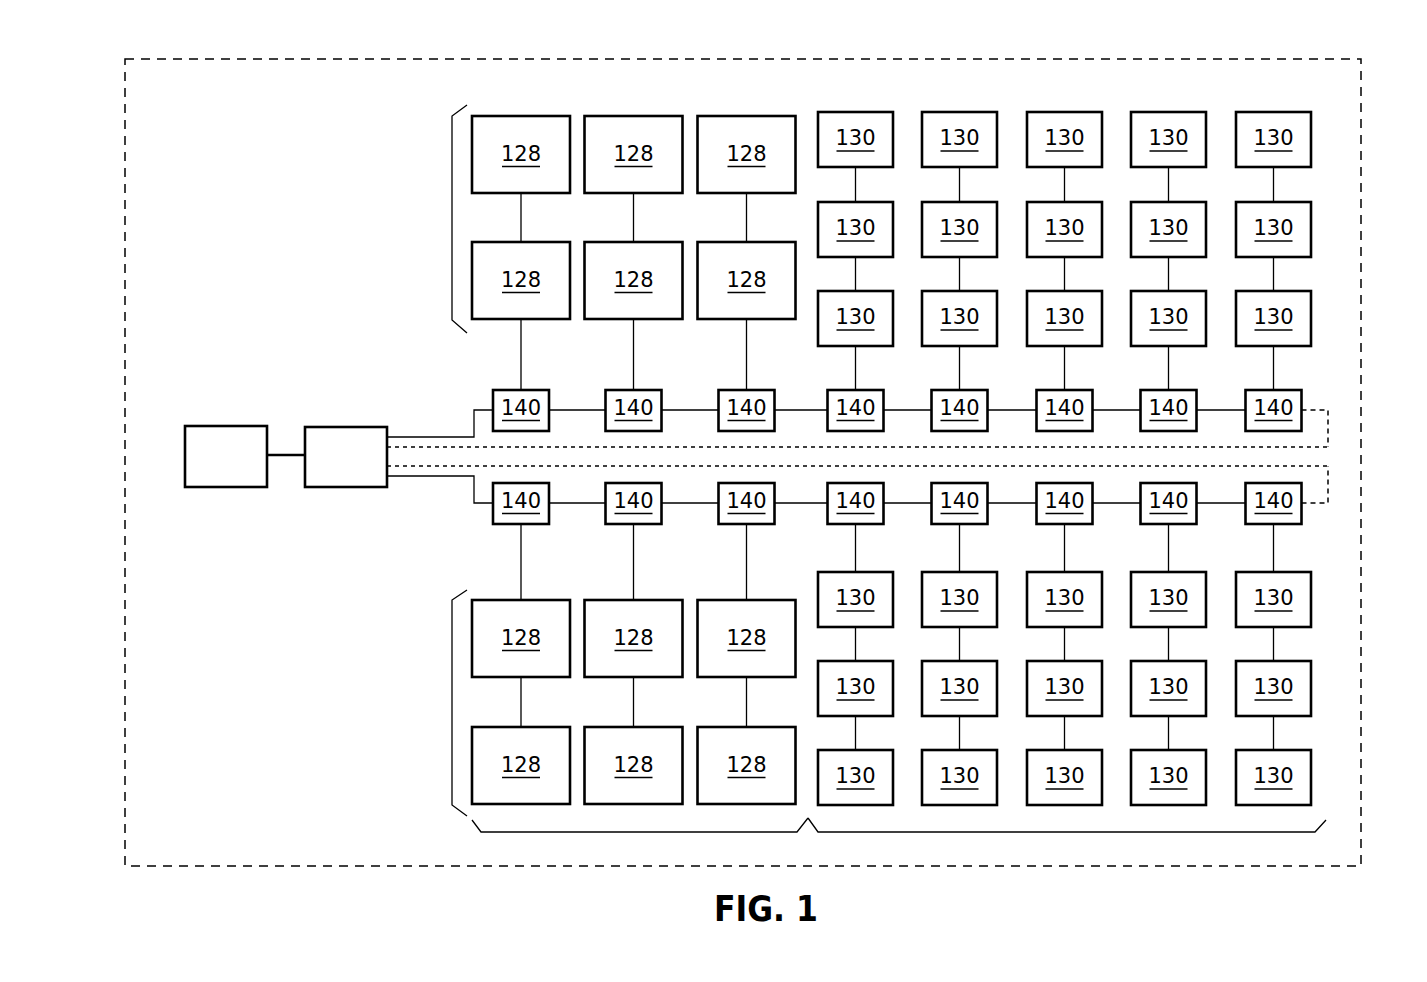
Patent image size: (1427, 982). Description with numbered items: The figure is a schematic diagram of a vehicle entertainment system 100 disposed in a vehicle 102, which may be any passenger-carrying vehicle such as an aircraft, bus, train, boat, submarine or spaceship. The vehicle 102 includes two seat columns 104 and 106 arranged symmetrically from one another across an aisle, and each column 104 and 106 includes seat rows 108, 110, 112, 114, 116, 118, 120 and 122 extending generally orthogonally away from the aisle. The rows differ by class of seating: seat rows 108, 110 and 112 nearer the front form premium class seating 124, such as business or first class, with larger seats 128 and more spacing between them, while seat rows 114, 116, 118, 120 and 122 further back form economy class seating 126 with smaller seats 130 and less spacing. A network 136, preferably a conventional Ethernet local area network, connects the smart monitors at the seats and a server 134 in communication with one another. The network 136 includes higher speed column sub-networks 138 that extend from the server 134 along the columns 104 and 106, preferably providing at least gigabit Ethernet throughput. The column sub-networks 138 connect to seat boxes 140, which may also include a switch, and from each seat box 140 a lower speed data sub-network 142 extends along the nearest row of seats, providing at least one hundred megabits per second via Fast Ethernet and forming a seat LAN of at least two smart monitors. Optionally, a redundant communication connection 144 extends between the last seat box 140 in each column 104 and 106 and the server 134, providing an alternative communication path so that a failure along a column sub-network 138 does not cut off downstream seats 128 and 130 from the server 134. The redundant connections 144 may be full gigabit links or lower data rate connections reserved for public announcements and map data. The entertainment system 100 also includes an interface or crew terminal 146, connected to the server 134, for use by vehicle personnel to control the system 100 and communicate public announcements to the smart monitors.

The vehicle entertainment system 100 is at (305, 763).
The vehicle 102 is at (293, 60).
The seat column 104 is at (452, 218).
The seat column 106 is at (452, 701).
The seat row 108 is at (537, 104).
The seat row 110 is at (642, 104).
The seat row 112 is at (747, 104).
The seat row 114 is at (855, 100).
The seat row 116 is at (960, 100).
The seat row 118 is at (1065, 100).
The seat row 120 is at (1170, 100).
The seat row 122 is at (1275, 100).
The premium class seating 124 is at (640, 832).
The economy class seating 126 is at (1112, 832).
The seat 128 is at (634, 460).
The seat 130 is at (1064, 458).
The server 134 is at (340, 427).
The network 136 is at (430, 566).
The column sub-network 138 is at (424, 437).
The seat box 140 is at (897, 457).
The lower speed data sub-network 142 is at (1310, 548).
The redundant communication connection 144 is at (1328, 421).
The crew terminal 146 is at (215, 426).